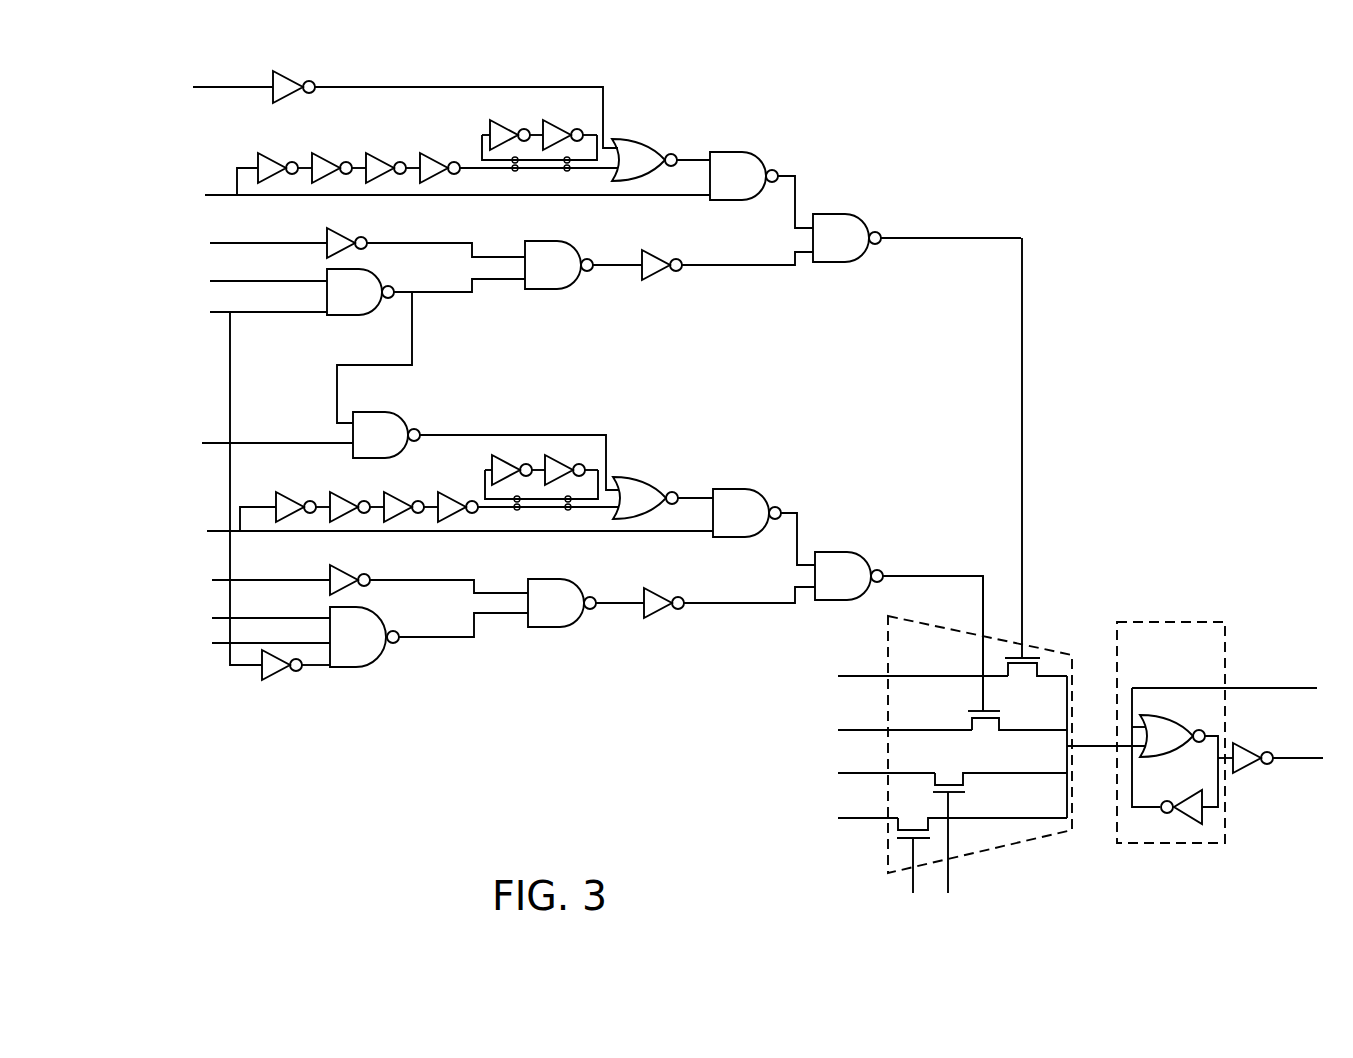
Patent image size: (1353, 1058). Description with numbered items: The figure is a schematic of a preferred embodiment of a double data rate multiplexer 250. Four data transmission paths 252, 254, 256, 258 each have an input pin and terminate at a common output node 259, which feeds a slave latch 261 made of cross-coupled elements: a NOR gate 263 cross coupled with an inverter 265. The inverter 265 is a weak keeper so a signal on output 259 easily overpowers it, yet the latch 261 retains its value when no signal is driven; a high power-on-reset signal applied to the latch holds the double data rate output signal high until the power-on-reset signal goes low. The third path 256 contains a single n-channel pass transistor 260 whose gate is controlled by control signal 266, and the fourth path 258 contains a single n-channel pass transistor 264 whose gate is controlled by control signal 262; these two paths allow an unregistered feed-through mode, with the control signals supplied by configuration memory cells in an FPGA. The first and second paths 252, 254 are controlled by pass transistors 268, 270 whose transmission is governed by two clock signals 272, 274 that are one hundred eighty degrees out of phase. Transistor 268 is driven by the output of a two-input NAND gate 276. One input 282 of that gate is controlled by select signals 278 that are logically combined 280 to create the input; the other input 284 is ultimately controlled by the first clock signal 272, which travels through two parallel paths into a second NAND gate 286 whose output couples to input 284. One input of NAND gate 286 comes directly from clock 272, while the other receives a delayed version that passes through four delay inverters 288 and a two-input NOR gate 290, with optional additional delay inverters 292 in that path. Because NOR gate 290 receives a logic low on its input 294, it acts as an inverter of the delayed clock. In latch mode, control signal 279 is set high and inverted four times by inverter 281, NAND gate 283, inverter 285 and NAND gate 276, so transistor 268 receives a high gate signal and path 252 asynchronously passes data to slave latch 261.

The double data rate multiplexer 250 is at (1132, 230).
The first data transmission path 252 is at (906, 676).
The second data transmission path 254 is at (888, 730).
The third data transmission path 256 is at (869, 773).
The fourth data transmission path 258 is at (851, 818).
The common output node 259 is at (1106, 738).
The n-channel pass transistor 260 is at (999, 772).
The slave latch 261 is at (1220, 732).
The control signal 262 is at (910, 877).
The NOR gate 263 is at (1179, 761).
The n-channel pass transistor 264 is at (982, 820).
The inverter 265 is at (1181, 802).
The control signal 266 is at (952, 854).
The n-channel pass transistor 268 is at (1036, 467).
The n-channel pass transistor 270 is at (1017, 662).
The first clock signal 272 is at (434, 200).
The second clock signal 274 is at (436, 517).
The two-input NAND gate 276 is at (917, 238).
The select signals 278 is at (206, 237).
The control signal 279 is at (268, 232).
The logic combination 280 is at (703, 298).
The inverter 281 is at (426, 236).
The first input of NAND gate 276 282 is at (747, 254).
The NAND gate 283 is at (583, 265).
The second input of NAND gate 276 284 is at (803, 202).
The inverter 285 is at (666, 258).
The second NAND gate 286 is at (744, 176).
The delay inverters 288 is at (460, 147).
The two-input NOR gate 290 is at (661, 160).
The additional delay inverters 292 is at (488, 121).
The NOR gate input 294 is at (466, 106).